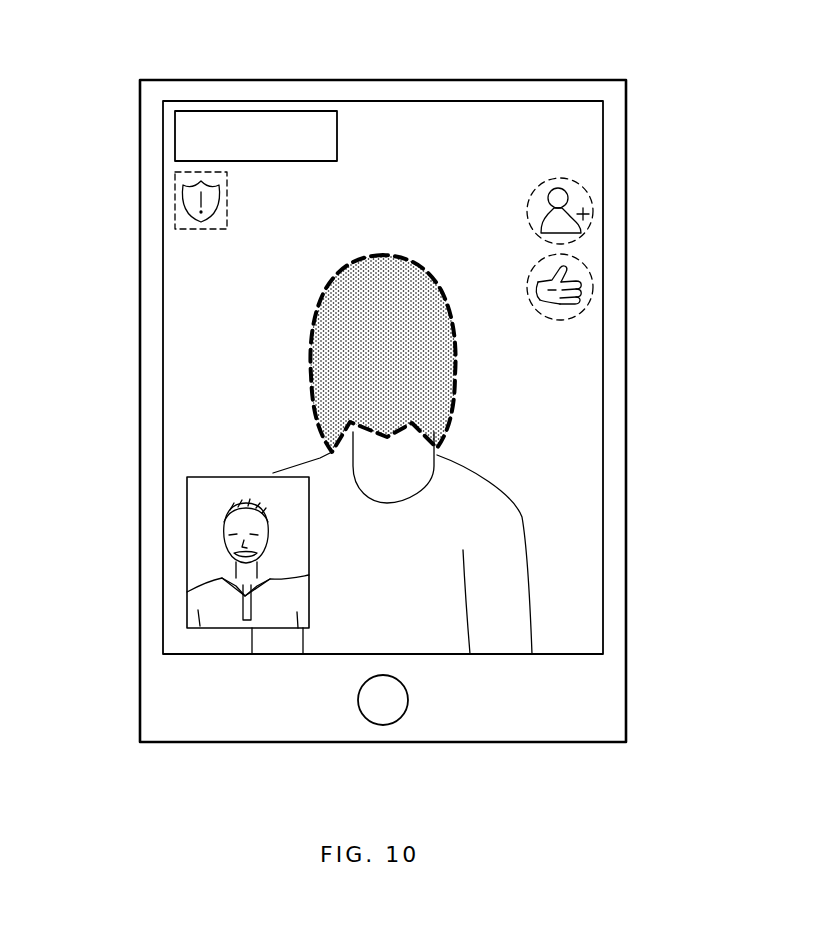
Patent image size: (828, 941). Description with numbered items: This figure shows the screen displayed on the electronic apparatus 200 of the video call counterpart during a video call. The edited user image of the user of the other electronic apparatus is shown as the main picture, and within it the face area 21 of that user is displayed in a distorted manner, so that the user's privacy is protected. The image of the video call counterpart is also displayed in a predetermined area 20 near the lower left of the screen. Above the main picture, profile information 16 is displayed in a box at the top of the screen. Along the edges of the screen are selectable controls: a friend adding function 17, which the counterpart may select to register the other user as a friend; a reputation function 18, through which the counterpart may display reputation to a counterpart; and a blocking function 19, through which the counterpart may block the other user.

The second electronic apparatus 200 is at (140, 410).
The profile information 16 is at (289, 111).
The friend adding function 17 is at (594, 210).
The reputation function 18 is at (596, 287).
The blocking function 19 is at (175, 192).
The predetermined area 20 is at (187, 552).
The face area 21 is at (421, 387).